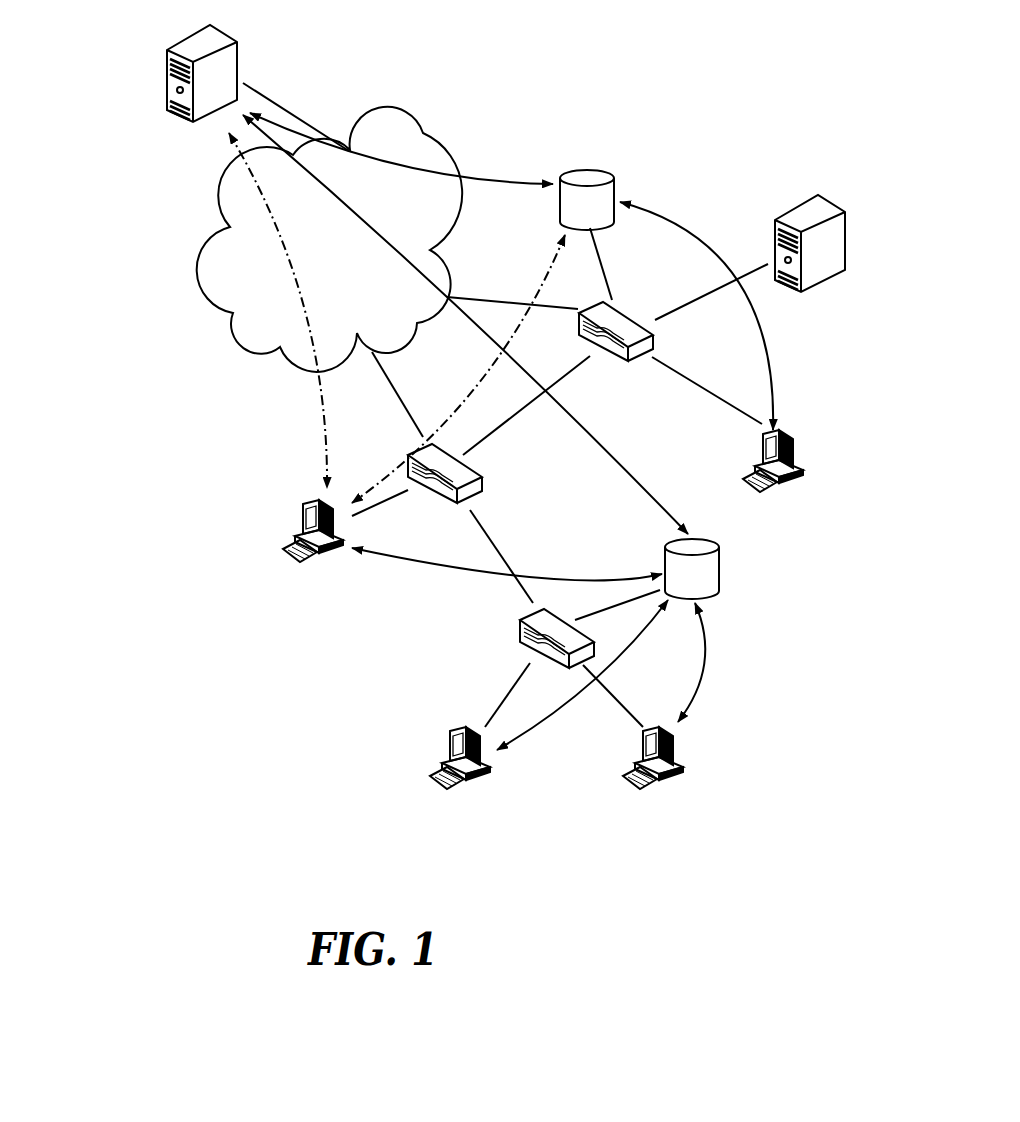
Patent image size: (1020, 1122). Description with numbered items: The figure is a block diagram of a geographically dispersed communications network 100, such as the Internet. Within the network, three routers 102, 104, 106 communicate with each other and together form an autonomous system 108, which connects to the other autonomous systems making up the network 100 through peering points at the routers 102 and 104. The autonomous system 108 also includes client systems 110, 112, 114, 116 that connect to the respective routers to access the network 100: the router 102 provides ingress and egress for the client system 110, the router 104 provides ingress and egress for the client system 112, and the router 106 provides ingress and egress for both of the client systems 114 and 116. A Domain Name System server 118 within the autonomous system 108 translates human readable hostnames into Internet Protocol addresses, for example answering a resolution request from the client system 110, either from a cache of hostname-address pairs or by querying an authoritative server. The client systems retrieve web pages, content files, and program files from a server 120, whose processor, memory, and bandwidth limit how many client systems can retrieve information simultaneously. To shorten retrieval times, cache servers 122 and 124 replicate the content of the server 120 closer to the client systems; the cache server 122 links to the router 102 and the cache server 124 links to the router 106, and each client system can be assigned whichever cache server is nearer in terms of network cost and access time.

The network 100 is at (176, 286).
The router 102 is at (626, 312).
The router 104 is at (460, 505).
The router 106 is at (520, 625).
The autonomous system 108 is at (664, 136).
The client system 110 is at (762, 437).
The client system 112 is at (312, 503).
The client system 114 is at (452, 733).
The client system 116 is at (648, 733).
The Domain Name System (DNS) server 118 is at (793, 222).
The server 120 is at (186, 53).
The cache server 122 is at (556, 222).
The cache server 124 is at (722, 568).